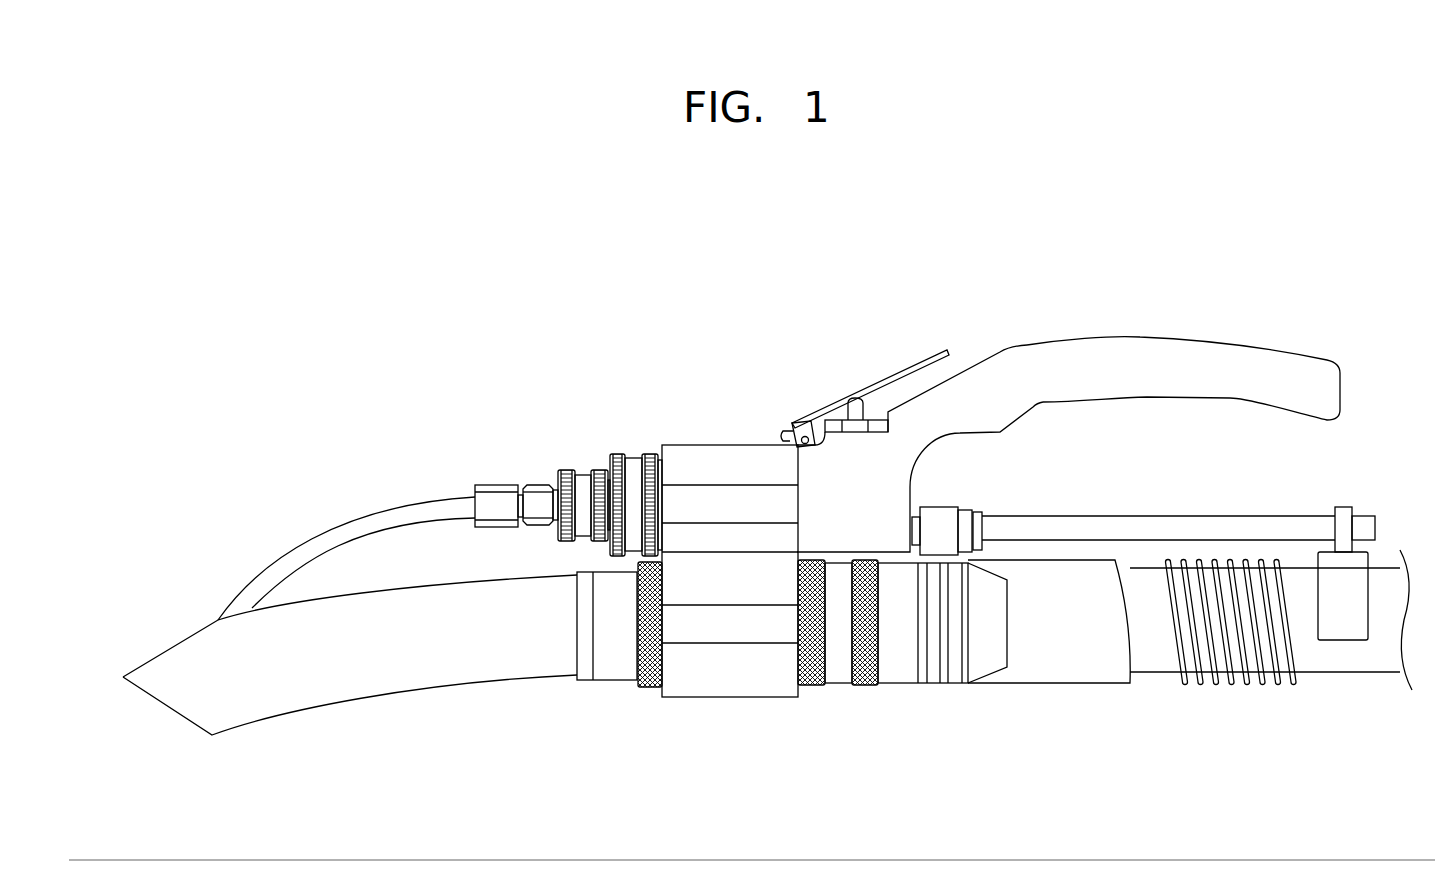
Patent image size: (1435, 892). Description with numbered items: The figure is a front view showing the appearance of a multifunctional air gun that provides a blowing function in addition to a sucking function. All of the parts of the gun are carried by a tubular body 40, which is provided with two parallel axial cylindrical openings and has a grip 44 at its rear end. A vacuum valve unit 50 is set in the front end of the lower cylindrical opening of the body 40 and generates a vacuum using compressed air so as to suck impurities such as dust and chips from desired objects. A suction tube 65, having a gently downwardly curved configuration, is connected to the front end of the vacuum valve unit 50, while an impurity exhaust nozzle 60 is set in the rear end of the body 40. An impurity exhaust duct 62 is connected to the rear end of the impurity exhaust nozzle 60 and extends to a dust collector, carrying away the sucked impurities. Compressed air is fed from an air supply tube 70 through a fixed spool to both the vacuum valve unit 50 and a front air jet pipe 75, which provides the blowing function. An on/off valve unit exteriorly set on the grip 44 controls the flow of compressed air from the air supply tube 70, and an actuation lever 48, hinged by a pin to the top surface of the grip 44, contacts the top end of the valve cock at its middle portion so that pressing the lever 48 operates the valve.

The tubular body 40 is at (693, 455).
The grip 44 is at (1200, 345).
The actuation lever 48 is at (903, 368).
The vacuum valve unit 50 is at (617, 668).
The impurity exhaust nozzle 60 is at (840, 673).
The impurity exhaust duct 62 is at (1337, 660).
The suction tube 65 is at (458, 658).
The air supply tube 70 is at (1112, 523).
The front air jet pipe 75 is at (332, 523).